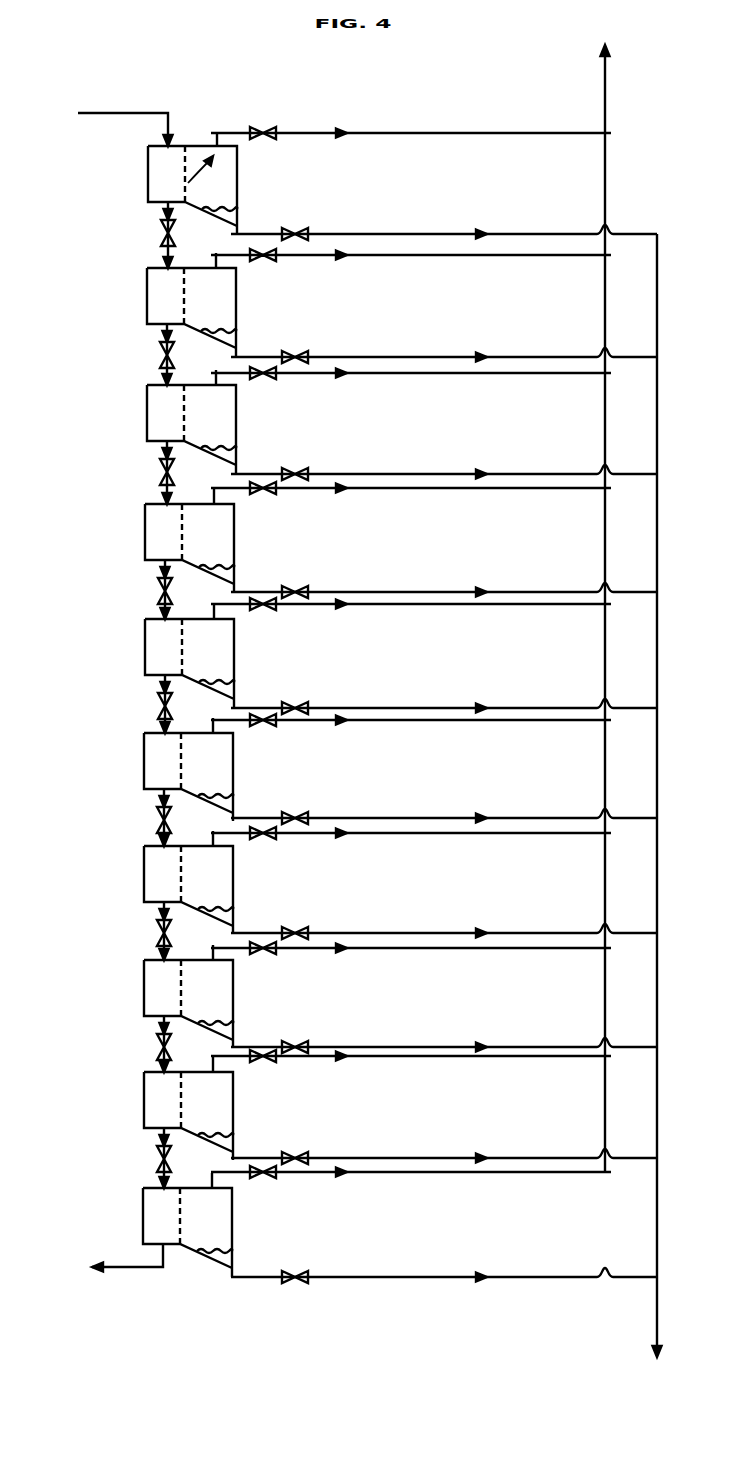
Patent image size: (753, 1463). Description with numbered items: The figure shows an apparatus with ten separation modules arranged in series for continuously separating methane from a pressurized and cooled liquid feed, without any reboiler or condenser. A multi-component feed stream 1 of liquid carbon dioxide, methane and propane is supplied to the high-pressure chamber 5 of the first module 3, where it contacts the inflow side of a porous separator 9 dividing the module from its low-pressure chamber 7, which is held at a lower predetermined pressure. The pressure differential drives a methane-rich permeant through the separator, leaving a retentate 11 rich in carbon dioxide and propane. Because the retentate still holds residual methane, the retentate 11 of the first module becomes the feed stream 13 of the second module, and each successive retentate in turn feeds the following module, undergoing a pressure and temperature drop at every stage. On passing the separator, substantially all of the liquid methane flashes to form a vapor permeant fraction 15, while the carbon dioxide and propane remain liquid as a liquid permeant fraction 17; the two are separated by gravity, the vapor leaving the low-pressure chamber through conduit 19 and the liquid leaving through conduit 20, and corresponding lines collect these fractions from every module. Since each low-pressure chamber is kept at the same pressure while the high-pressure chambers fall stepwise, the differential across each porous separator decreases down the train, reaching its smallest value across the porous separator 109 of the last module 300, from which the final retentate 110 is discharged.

The multi-component feed stream 1 is at (115, 112).
The first module 3 is at (240, 177).
The high-pressure chamber 5 is at (163, 178).
The low-pressure chamber 7 is at (230, 194).
The porous separator 9 is at (186, 171).
The retentate 11 is at (163, 212).
The feed stream of the second module 13 is at (160, 253).
The vapor permeant fraction 15 is at (198, 172).
The liquid permeant fraction 17 is at (230, 215).
The conduit 19 is at (373, 133).
The conduit 20 is at (382, 234).
The porous separator 109 is at (182, 1215).
The last module 300 is at (232, 1237).
The retentate 110 is at (142, 1267).